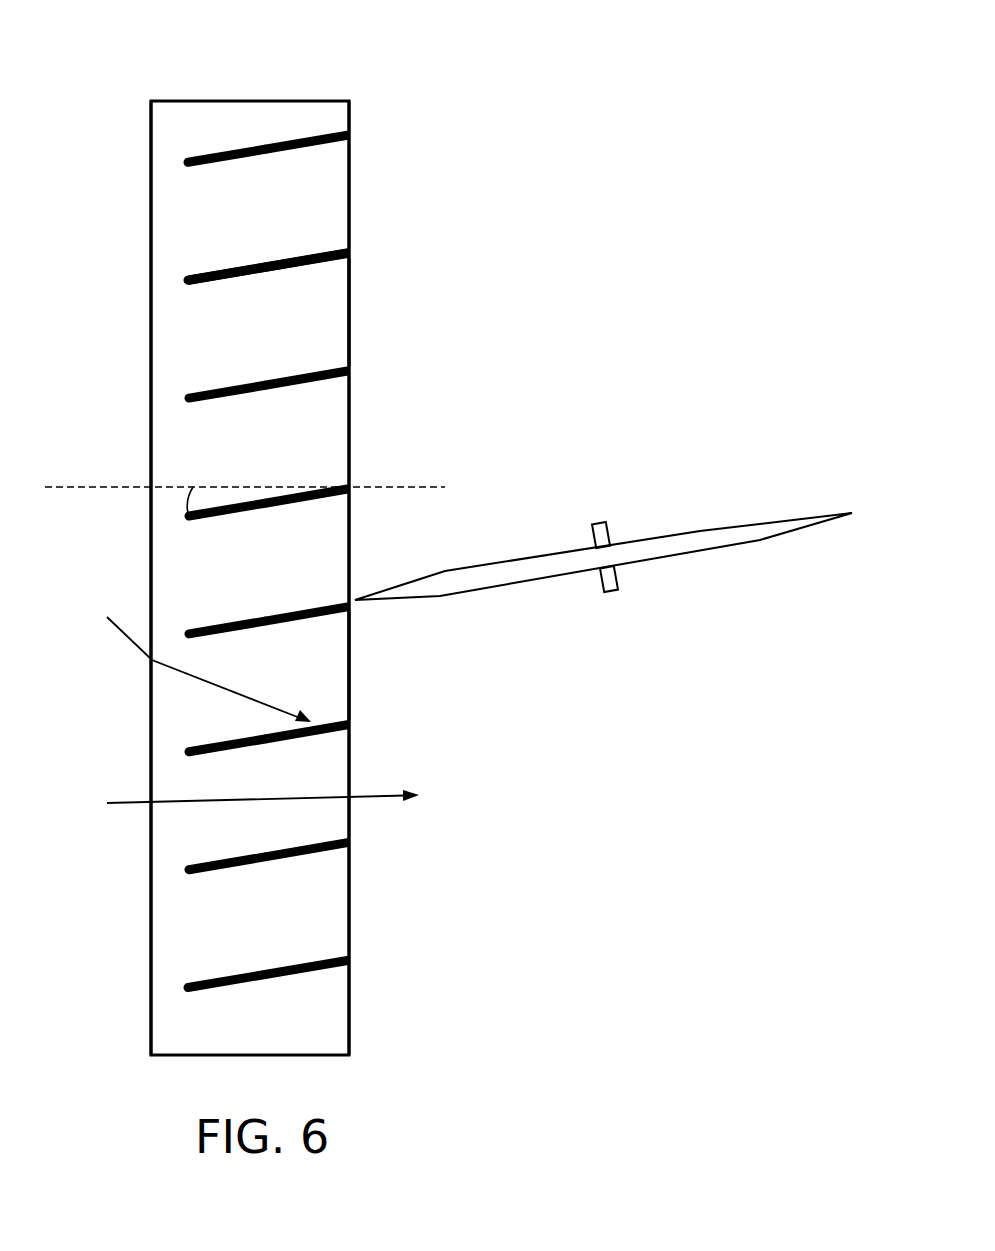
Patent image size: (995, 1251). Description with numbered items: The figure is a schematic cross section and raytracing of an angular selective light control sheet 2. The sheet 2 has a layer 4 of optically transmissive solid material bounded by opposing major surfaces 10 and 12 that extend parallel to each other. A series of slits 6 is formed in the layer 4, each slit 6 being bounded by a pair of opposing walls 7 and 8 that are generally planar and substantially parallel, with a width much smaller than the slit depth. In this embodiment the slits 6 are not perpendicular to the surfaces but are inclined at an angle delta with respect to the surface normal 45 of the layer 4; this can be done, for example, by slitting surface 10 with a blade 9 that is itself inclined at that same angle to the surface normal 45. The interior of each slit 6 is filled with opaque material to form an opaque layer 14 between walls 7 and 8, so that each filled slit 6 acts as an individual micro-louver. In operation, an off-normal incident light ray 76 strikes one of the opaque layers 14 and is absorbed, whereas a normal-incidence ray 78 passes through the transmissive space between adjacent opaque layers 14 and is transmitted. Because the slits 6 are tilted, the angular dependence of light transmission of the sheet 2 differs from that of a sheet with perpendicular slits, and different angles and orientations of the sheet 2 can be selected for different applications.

The light control sheet 2 is at (297, 80).
The layer 4 is at (316, 1028).
The slit 6 is at (228, 280).
The wall 7 is at (222, 270).
The wall 8 is at (240, 278).
The blade 9 is at (772, 517).
The major surface 10 is at (349, 182).
The major surface 12 is at (151, 263).
The opaque layer 14 is at (349, 363).
The surface normal 45 is at (397, 487).
The light ray 76 is at (137, 646).
The normal-incidence ray 78 is at (133, 806).